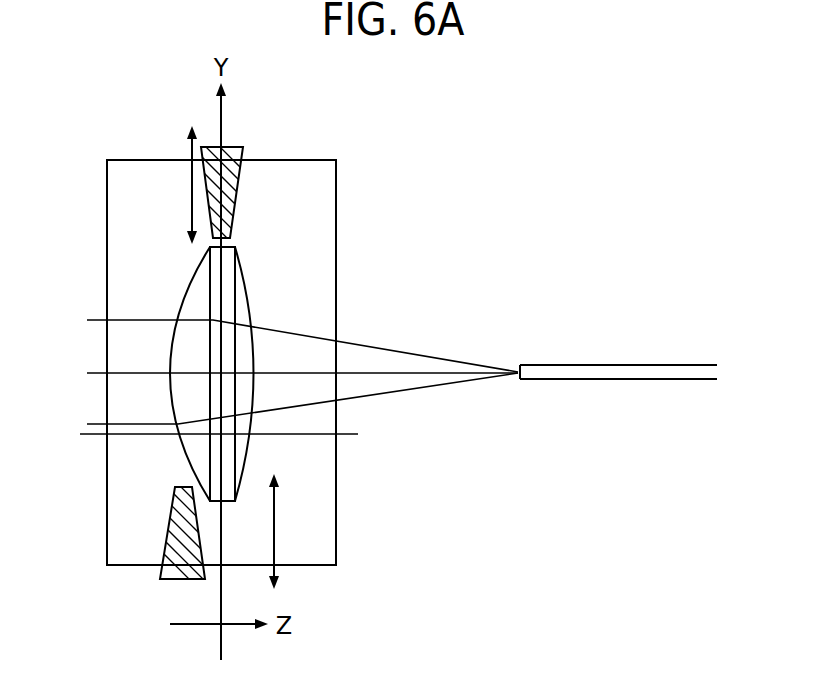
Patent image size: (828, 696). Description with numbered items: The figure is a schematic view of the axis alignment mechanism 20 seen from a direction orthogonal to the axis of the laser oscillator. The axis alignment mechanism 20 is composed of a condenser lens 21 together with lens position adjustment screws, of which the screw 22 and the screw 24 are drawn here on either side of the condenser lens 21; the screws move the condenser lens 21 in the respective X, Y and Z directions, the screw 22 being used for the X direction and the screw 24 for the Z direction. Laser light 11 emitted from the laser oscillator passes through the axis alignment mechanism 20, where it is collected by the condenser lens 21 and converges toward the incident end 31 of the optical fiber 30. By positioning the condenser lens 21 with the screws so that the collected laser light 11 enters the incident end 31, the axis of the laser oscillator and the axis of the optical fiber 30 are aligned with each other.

The laser light 11 is at (88, 320).
The axis alignment mechanism 20 is at (107, 191).
The condenser lens 21 is at (248, 298).
The lens position adjustment screw 22 is at (237, 195).
The lens position adjustment screw 24 is at (167, 533).
The optical fiber 30 is at (623, 365).
The incident end 31 is at (520, 364).